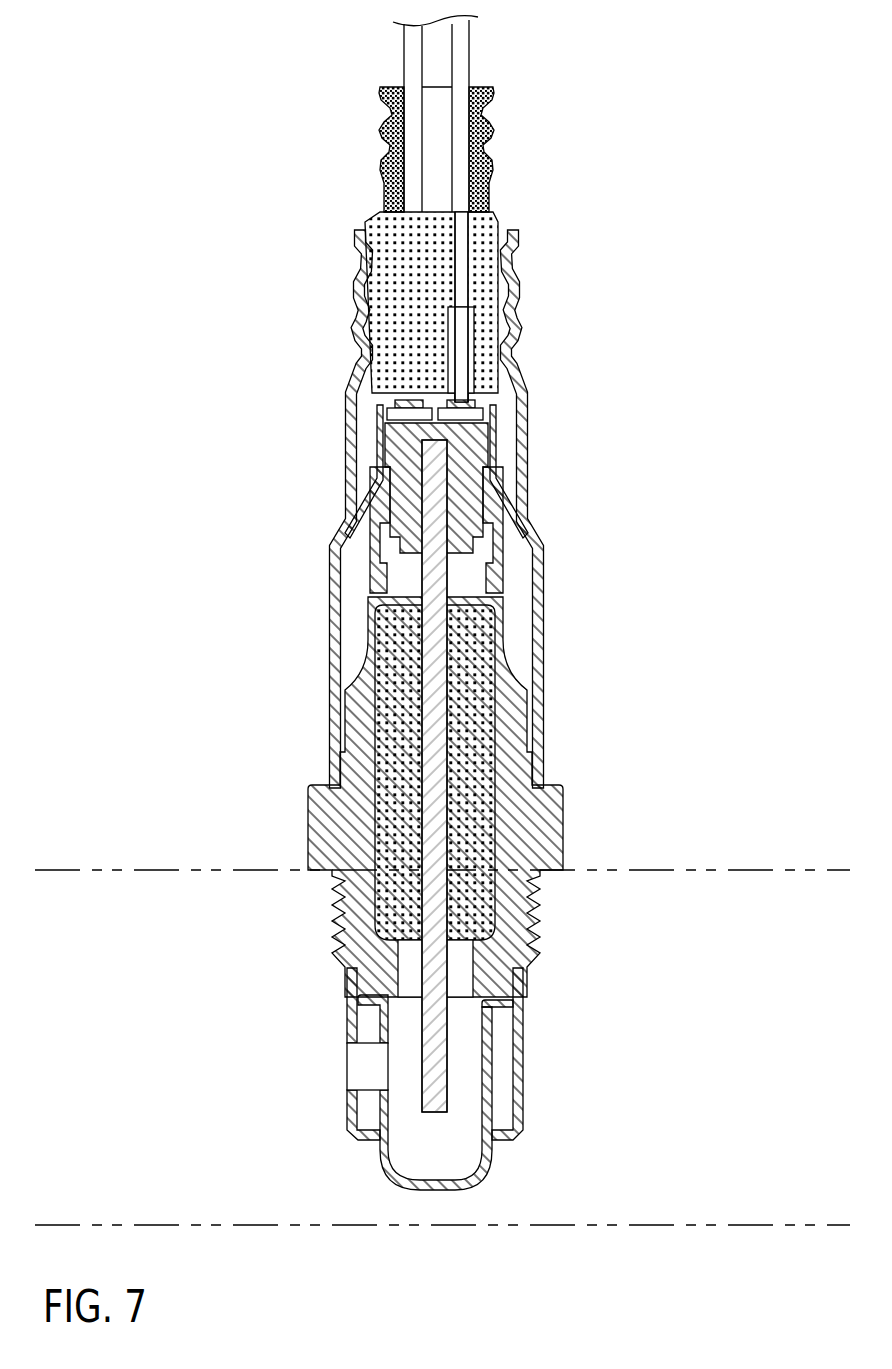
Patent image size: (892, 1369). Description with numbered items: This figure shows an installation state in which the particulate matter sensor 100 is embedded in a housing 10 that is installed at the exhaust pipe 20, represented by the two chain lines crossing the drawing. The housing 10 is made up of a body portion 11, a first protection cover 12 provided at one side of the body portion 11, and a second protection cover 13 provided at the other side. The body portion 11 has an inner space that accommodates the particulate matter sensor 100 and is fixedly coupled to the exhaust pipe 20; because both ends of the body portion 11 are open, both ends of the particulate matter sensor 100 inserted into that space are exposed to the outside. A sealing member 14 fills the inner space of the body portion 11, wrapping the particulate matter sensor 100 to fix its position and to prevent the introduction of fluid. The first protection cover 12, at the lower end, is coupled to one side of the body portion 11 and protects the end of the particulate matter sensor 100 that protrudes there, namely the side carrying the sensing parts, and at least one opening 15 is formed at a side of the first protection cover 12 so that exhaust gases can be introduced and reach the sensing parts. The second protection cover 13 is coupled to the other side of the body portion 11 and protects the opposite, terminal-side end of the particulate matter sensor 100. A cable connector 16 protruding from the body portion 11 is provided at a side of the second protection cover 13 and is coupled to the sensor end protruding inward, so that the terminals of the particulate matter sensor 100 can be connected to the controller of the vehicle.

The housing 10 is at (441, 610).
The body portion 11 is at (553, 830).
The first protection cover 12 is at (482, 1172).
The second protection cover 13 is at (330, 552).
The sealing member 14 is at (398, 709).
The opening 15 is at (355, 1065).
The cable connector 16 is at (378, 450).
The exhaust pipe 20 is at (708, 1208).
The particulate matter sensor 100 is at (440, 657).